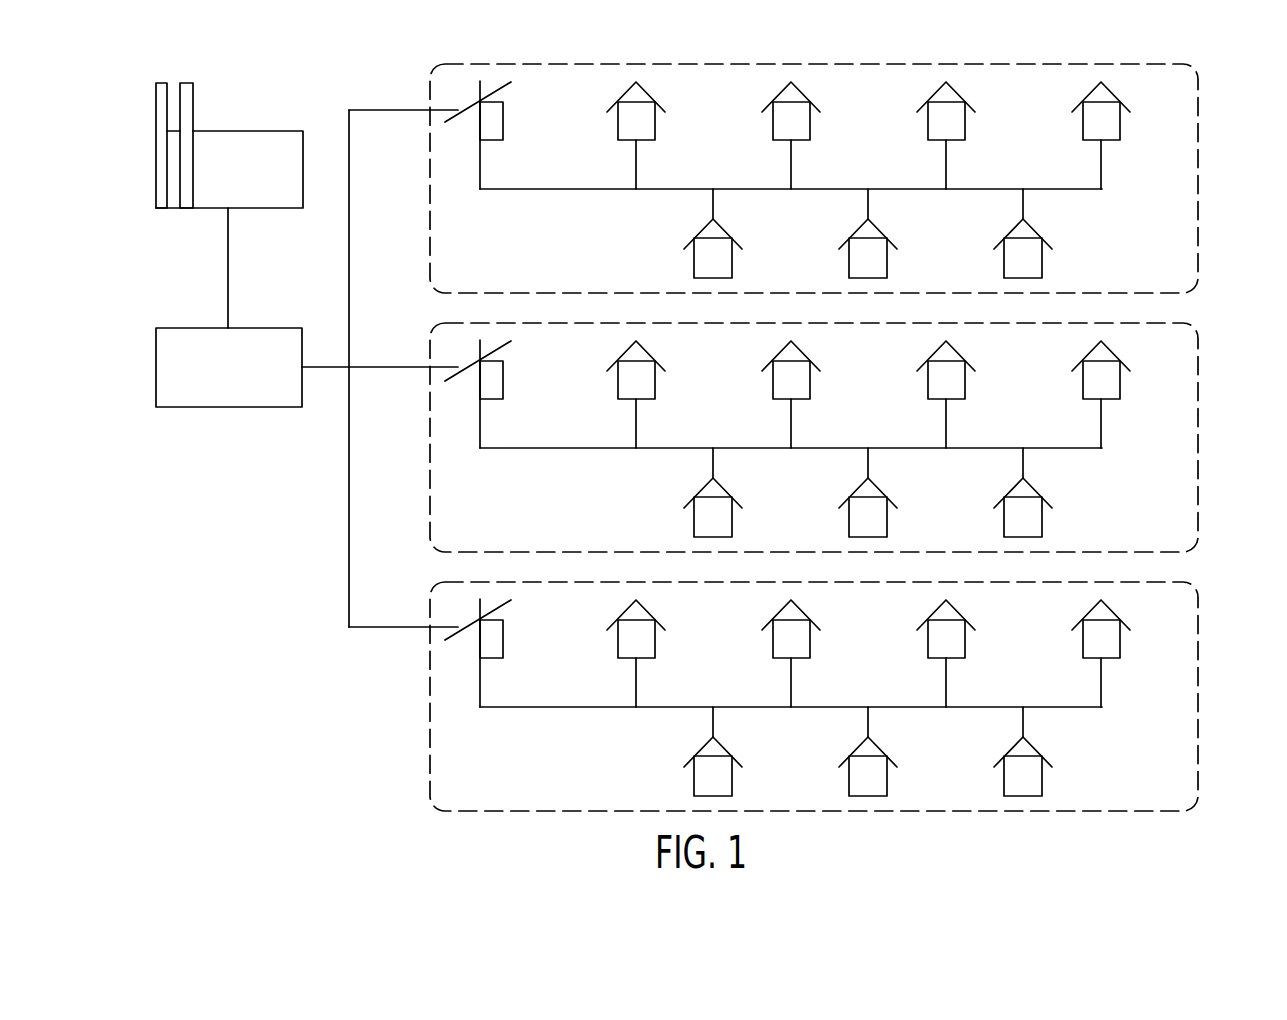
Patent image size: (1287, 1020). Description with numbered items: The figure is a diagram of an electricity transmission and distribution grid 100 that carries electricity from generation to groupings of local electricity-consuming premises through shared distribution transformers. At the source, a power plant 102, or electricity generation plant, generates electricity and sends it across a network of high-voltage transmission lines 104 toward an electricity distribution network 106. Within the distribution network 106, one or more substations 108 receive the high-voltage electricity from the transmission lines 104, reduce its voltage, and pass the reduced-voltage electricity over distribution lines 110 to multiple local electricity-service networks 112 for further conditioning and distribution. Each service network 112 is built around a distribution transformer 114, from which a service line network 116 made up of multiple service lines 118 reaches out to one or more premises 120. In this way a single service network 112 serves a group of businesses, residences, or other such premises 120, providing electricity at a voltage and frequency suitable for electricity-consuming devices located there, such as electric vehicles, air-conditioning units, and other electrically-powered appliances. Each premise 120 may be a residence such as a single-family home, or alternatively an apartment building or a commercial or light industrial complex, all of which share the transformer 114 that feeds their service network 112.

The electricity transmission and distribution grid 100 is at (811, 45).
The power plant 102 is at (238, 131).
The high-voltage transmission lines 104 is at (228, 268).
The electricity distribution network 106 is at (241, 533).
The substation 108 is at (228, 407).
The distribution lines 110 is at (363, 110).
The electricity-service network 112 is at (1198, 190).
The distribution transformer 114 is at (503, 122).
The service line network 116 is at (647, 170).
The service lines 118 is at (636, 165).
The premise 120 is at (655, 128).